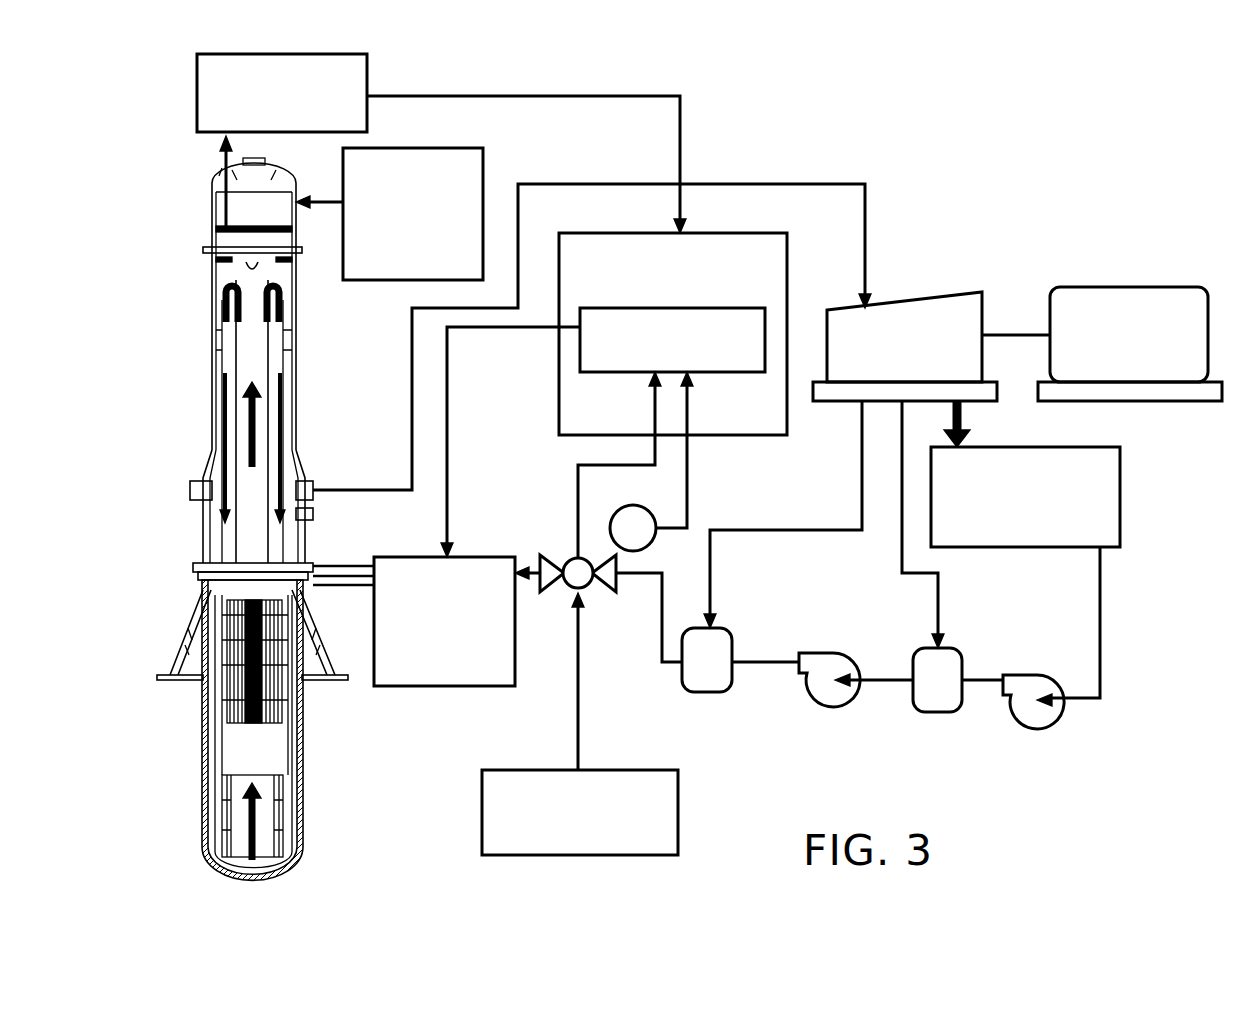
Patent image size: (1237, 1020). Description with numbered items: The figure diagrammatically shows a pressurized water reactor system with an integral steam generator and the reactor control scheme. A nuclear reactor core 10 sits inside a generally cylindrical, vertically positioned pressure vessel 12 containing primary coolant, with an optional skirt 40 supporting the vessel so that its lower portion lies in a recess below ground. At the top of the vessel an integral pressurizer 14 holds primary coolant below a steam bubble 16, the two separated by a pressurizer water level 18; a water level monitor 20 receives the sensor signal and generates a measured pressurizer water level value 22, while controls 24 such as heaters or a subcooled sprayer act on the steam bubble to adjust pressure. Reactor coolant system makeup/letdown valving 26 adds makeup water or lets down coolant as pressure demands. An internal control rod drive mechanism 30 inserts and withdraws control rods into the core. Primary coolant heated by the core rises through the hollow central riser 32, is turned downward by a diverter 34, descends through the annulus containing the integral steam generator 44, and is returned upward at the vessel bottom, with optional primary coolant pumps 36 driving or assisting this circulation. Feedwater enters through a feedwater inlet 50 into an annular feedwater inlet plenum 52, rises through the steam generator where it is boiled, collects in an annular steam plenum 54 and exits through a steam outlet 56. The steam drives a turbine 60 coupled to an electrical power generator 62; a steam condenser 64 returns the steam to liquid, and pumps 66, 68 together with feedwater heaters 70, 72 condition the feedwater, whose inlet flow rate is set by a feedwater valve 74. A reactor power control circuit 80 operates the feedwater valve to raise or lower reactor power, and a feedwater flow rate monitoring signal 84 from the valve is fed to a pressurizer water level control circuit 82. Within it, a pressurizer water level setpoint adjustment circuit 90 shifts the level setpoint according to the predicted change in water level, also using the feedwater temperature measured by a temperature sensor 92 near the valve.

The nuclear reactor core 10 is at (243, 825).
The pressure vessel 12 is at (205, 523).
The integral pressurizer 14 is at (182, 163).
The steam bubble 16 is at (222, 202).
The pressurizer water level 18 is at (222, 228).
The water level monitor 20 is at (197, 107).
The measured pressurizer water level value 22 is at (553, 95).
The pressurizer controls 24 is at (483, 172).
The reactor coolant system makeup/letdown valving 26 is at (418, 686).
The control rod drive mechanism 30 is at (243, 717).
The central riser 32 is at (218, 358).
The diverter 34 is at (245, 266).
The primary coolant pumps 36 is at (203, 612).
The skirt 40 is at (185, 665).
The integral steam generator 44 is at (227, 422).
The feedwater inlet 50 is at (305, 520).
The annular feedwater inlet plenum 52 is at (210, 533).
The annular steam plenum 54 is at (208, 470).
The steam outlet 56 is at (308, 478).
The turbine 60 is at (905, 298).
The electrical power generator 62 is at (1098, 287).
The steam condenser 64 is at (1120, 487).
The pump 66 is at (1033, 728).
The pump 68 is at (846, 656).
The feedwater heater 70 is at (950, 712).
The feedwater heater 72 is at (728, 634).
The feedwater valve 74 is at (600, 590).
The reactor power control circuit 80 is at (680, 808).
The pressurizer water level control circuit 82 is at (755, 233).
The feedwater flow rate monitoring signal 84 is at (598, 468).
The pressurizer water level setpoint adjustment circuit 90 is at (705, 372).
The temperature sensor 92 is at (652, 513).